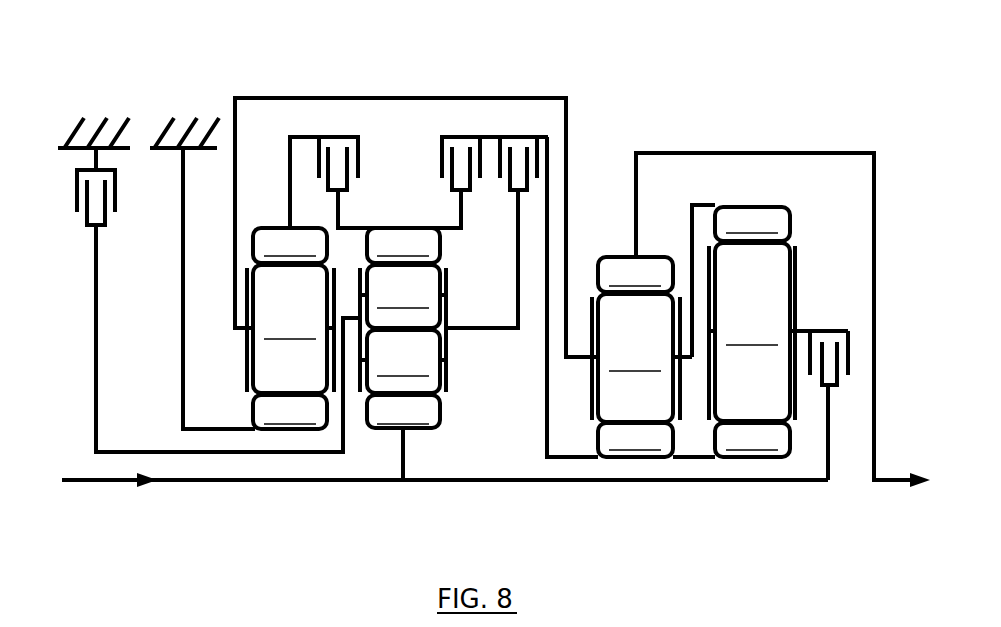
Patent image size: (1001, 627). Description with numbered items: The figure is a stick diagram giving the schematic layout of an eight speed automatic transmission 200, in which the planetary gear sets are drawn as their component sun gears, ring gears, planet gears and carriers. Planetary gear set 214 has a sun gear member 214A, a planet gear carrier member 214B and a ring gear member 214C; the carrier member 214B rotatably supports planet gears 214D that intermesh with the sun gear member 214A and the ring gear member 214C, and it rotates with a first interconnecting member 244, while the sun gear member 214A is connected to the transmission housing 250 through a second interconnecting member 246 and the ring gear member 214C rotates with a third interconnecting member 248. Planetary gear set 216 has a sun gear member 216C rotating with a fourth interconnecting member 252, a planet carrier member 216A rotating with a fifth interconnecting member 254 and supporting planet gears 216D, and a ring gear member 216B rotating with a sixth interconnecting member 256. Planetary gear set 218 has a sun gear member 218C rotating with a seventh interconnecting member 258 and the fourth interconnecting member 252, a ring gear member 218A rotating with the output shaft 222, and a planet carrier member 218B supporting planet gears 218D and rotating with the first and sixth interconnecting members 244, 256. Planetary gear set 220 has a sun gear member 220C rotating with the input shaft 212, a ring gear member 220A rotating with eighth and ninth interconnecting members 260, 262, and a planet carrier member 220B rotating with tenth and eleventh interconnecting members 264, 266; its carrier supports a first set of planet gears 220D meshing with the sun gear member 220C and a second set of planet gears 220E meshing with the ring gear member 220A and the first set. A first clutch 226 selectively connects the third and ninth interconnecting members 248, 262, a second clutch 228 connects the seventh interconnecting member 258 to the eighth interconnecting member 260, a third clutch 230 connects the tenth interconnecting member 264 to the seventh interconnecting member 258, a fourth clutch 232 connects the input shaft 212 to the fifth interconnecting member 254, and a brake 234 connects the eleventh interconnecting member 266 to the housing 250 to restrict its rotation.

The eight speed transmission 200 is at (636, 54).
The input shaft or member 212 is at (98, 483).
The planetary gear set 214 is at (262, 374).
The sun gear member 214A is at (290, 412).
The planet gear carrier member 214B is at (246, 365).
The ring gear member 214C is at (290, 245).
The planet gears 214D is at (290, 329).
The planetary gear set 216 is at (779, 362).
The planet carrier member 216A is at (797, 272).
The ring gear member 216B is at (752, 224).
The sun gear member 216C is at (752, 440).
The planet gears 216D is at (752, 332).
The planetary gear set 218 is at (612, 370).
The ring gear member 218A is at (635, 274).
The planet carrier member 218B is at (592, 298).
The sun gear member 218C is at (635, 440).
The planet gears 218D is at (635, 358).
The planetary gear set 220 is at (431, 354).
The ring gear member 220A is at (403, 245).
The planet carrier member 220B is at (448, 287).
The sun gear member 220C is at (403, 437).
The first set of planet gears 220D is at (403, 361).
The second set of planet gears 220E is at (403, 296).
The output shaft or member 222 is at (900, 485).
The first clutch 226 is at (358, 157).
The second clutch 228 is at (440, 170).
The third clutch 230 is at (497, 172).
The fourth clutch 232 is at (848, 368).
The brake 234 is at (115, 197).
The first interconnecting shaft or member 244 is at (430, 97).
The second interconnecting shaft or member 246 is at (183, 293).
The third interconnecting shaft or member 248 is at (287, 175).
The transmission housing 250 is at (144, 150).
The fourth interconnecting shaft or member 252 is at (680, 460).
The fifth interconnecting shaft or member 254 is at (798, 326).
The sixth interconnecting shaft or member 256 is at (708, 205).
The seventh interconnecting shaft or member 258 is at (546, 380).
The eighth interconnecting shaft or member 260 is at (452, 224).
The ninth interconnecting shaft or member 262 is at (360, 226).
The tenth interconnecting shaft or member 264 is at (493, 330).
The eleventh interconnecting shaft or member 266 is at (97, 385).